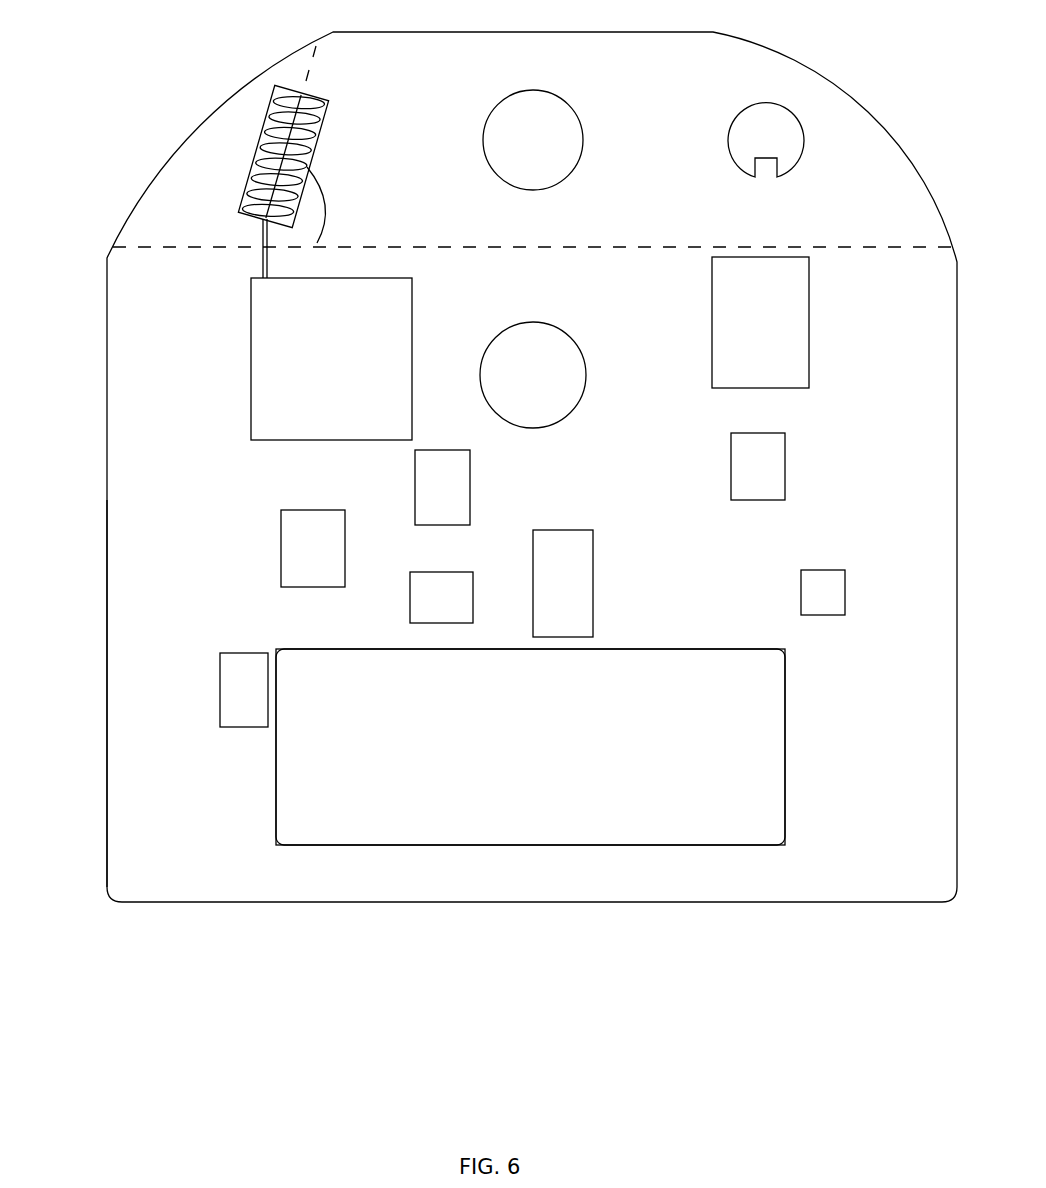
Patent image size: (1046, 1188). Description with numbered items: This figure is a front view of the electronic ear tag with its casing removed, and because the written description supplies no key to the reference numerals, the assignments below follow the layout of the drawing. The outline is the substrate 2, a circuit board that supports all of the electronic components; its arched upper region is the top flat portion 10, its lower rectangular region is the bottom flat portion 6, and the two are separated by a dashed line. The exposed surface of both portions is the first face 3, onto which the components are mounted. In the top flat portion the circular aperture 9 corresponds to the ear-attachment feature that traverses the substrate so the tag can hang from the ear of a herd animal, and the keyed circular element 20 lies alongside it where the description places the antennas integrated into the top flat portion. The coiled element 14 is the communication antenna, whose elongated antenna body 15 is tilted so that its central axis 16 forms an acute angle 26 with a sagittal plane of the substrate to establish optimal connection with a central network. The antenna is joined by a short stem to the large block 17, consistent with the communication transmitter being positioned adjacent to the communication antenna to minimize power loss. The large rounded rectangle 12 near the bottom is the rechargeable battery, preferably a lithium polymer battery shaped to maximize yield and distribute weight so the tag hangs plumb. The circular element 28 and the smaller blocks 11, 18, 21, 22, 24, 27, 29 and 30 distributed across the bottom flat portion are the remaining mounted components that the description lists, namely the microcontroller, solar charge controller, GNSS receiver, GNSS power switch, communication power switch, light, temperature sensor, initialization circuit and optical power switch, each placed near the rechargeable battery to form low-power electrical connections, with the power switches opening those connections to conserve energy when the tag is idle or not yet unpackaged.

The housing 2 is at (133, 218).
The substrate surface 3 is at (662, 102).
The device body 6 is at (122, 478).
The opening 9 is at (543, 146).
The partition line 10 is at (205, 248).
The component 11 is at (578, 578).
The battery 12 is at (285, 778).
The spring assembly 14 is at (220, 138).
The spring stem 15 is at (243, 172).
The spring axis 16 is at (303, 64).
The controller module 17 is at (262, 360).
The component 18 is at (292, 553).
The keyed opening 20 is at (770, 168).
The component 21 is at (805, 305).
The component 22 is at (778, 458).
The component 24 is at (228, 692).
The pivot arc 26 is at (328, 197).
The component 27 is at (825, 605).
The opening 28 is at (563, 405).
The component 29 is at (462, 492).
The component 30 is at (420, 597).